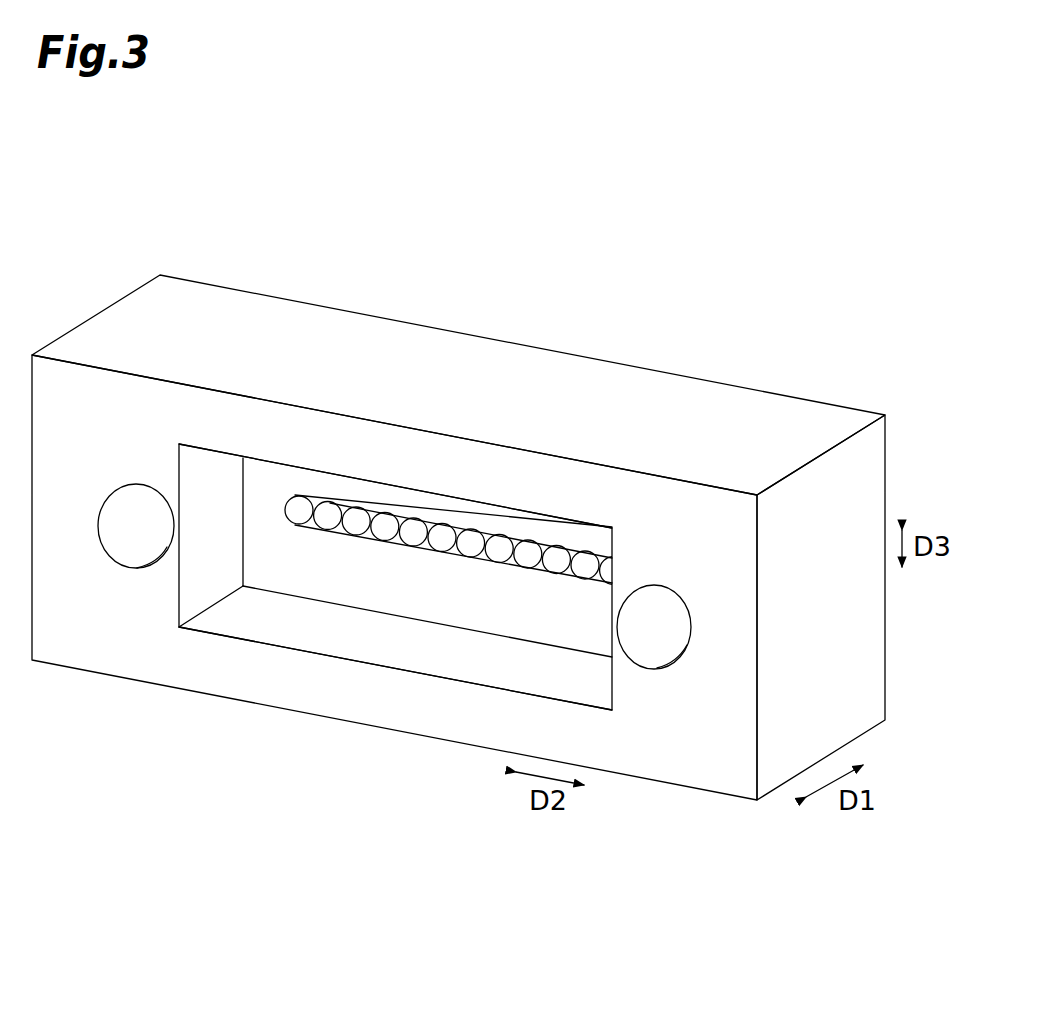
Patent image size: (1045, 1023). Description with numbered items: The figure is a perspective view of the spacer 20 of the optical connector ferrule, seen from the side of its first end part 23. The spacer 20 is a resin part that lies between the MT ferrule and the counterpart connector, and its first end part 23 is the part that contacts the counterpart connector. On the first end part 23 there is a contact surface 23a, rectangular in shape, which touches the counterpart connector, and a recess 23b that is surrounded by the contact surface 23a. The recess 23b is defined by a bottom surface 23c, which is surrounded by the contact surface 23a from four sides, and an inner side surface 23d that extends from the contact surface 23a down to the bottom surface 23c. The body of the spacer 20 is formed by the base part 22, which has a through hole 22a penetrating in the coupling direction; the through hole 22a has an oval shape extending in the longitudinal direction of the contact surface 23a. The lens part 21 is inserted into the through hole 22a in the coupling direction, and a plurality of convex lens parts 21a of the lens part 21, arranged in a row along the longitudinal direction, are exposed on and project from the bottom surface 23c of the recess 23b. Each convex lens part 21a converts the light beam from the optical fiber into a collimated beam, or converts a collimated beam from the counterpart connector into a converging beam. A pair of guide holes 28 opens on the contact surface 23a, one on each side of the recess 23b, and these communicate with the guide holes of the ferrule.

The spacer 20 is at (458, 509).
The lens part 21 is at (490, 542).
The convex lens part 21a is at (299, 503).
The base part 22 is at (764, 402).
The through hole 22a is at (296, 530).
The first end part 23 is at (383, 660).
The contact surface 23a is at (262, 670).
The recess 23b is at (395, 725).
The bottom surface 23c is at (387, 575).
The inner side surface 23d is at (467, 657).
The guide holes 28 is at (125, 542).